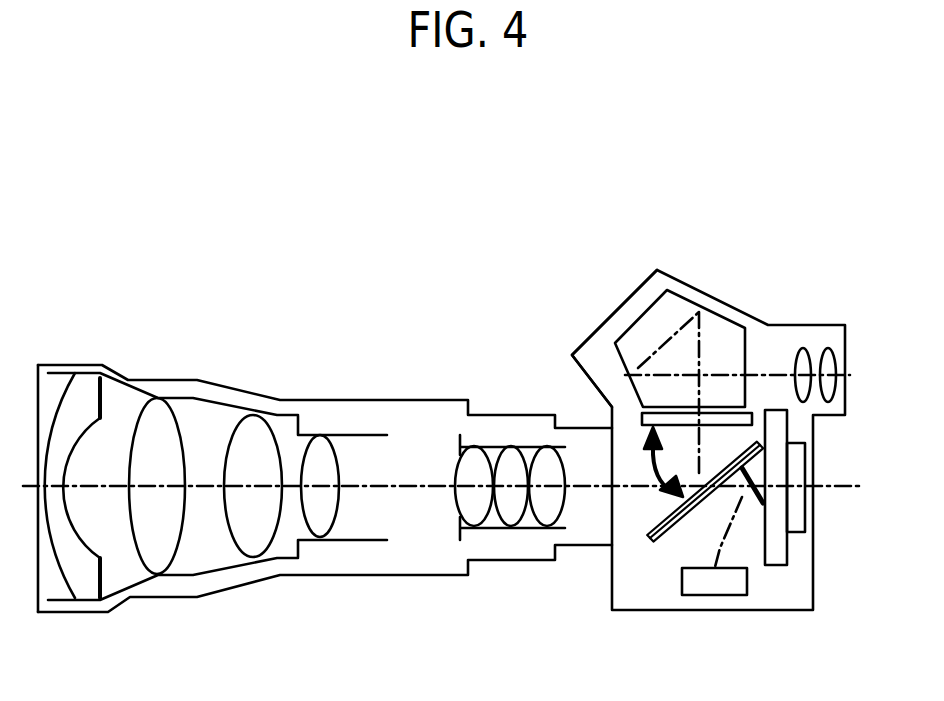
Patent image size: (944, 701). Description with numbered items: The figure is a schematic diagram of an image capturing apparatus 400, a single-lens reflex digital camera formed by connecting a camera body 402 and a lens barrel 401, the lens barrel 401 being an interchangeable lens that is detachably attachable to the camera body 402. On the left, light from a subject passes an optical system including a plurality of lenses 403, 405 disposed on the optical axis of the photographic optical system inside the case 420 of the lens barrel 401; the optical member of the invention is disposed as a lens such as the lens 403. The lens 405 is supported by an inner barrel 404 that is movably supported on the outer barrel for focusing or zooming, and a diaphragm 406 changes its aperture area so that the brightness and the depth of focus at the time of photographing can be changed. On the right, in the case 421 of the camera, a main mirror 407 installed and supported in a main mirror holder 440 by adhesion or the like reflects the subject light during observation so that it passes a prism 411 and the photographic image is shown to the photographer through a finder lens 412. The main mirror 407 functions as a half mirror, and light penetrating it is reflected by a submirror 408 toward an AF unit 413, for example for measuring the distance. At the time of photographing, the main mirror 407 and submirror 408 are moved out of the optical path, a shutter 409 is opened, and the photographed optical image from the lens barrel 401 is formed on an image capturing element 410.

The image capturing apparatus 400 is at (497, 179).
The lens barrel 401 is at (42, 227).
The camera body 402 is at (593, 228).
The lens 403 is at (82, 390).
The case 420 is at (232, 388).
The inner barrel 404 is at (338, 432).
The lens 405 is at (322, 523).
The diaphragm 406 is at (460, 450).
The case 421 is at (607, 315).
The prism 411 is at (717, 333).
The finder lens 412 is at (830, 345).
The main mirror 407 is at (652, 537).
The main mirror holder 440 is at (657, 540).
The submirror 408 is at (753, 500).
The AF unit 413 is at (723, 583).
The shutter 409 is at (777, 553).
The image capturing element 410 is at (797, 518).